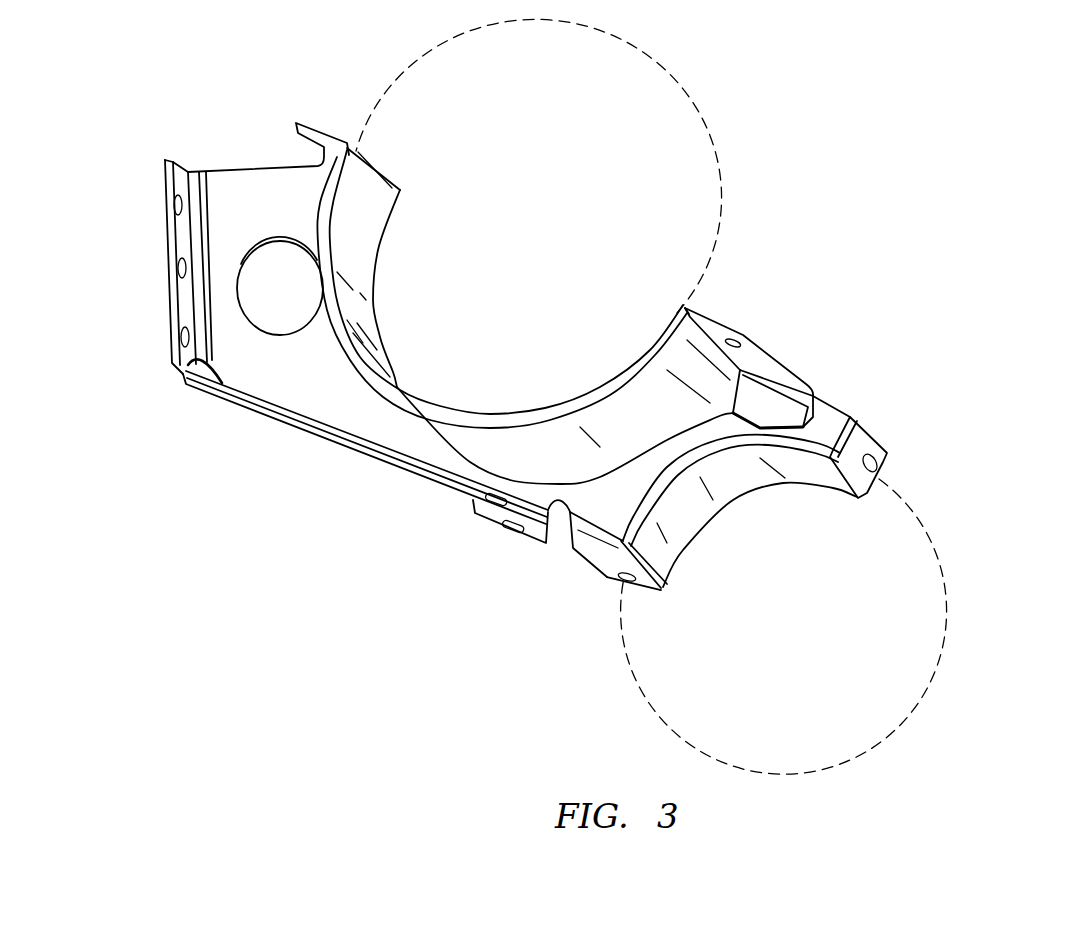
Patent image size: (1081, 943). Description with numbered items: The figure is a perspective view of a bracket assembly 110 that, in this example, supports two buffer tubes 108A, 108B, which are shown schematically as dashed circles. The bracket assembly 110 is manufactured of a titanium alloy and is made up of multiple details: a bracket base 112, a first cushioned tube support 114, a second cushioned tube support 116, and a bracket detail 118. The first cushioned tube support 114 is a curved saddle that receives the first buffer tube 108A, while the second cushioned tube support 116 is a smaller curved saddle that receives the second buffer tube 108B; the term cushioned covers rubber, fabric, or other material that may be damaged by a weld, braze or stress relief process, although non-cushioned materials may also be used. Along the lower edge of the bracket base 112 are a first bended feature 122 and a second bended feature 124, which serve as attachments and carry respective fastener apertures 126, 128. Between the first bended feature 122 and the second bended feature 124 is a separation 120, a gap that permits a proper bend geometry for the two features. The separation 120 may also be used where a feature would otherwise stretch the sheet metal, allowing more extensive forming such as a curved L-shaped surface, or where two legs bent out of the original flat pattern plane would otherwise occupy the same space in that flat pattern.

The buffer tube 108A is at (720, 180).
The buffer tube 108B is at (944, 568).
The bracket assembly 110 is at (580, 399).
The bracket base 112 is at (352, 418).
The first cushioned tube support 114 is at (370, 244).
The second cushioned tube support 116 is at (717, 507).
The bracket detail 118 is at (778, 352).
The separation 120 is at (561, 545).
The first bended feature 122 is at (485, 518).
The second bended feature 124 is at (610, 577).
The fastener aperture 126 is at (497, 508).
The fastener aperture 128 is at (630, 590).